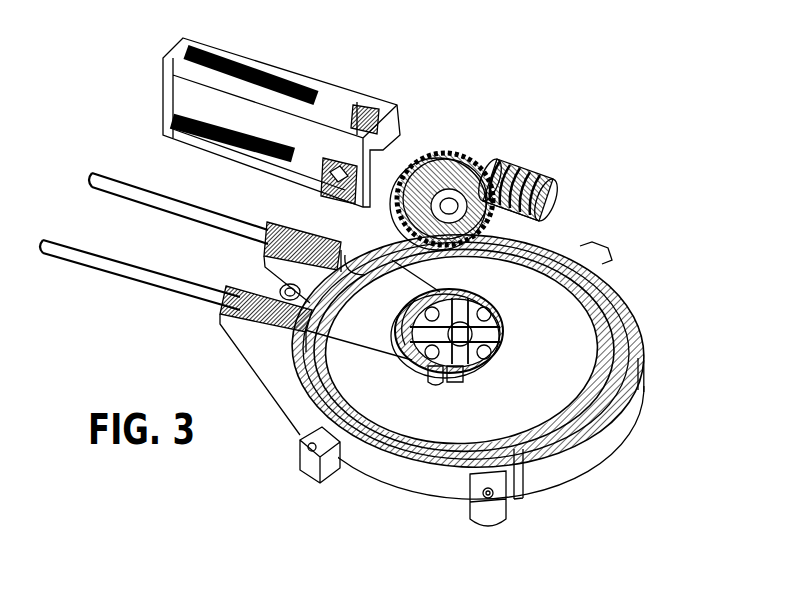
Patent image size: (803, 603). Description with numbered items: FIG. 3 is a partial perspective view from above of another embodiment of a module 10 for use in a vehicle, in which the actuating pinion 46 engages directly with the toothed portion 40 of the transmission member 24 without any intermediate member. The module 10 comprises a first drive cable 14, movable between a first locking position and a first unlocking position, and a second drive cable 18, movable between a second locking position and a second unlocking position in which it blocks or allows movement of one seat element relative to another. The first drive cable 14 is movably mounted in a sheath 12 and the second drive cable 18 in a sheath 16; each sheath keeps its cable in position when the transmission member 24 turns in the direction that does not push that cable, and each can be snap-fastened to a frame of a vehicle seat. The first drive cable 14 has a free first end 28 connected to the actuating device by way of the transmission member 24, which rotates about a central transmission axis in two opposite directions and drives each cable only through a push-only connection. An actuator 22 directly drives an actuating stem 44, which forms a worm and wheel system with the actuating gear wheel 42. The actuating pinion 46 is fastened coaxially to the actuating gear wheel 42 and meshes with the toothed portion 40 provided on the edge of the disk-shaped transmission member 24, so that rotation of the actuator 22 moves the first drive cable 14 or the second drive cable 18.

The module 10 is at (610, 100).
The sheath 12 is at (113, 168).
The first drive cable 14 is at (392, 260).
The sheath 16 is at (112, 284).
The second drive cable 18 is at (293, 407).
The actuator 22 is at (350, 92).
The transmission member 24 is at (572, 327).
The first end 28 is at (500, 318).
The toothed portion 40 is at (563, 268).
The actuating gear wheel 42 is at (496, 158).
The actuating stem 44 is at (458, 150).
The actuating pinion 46 is at (511, 211).